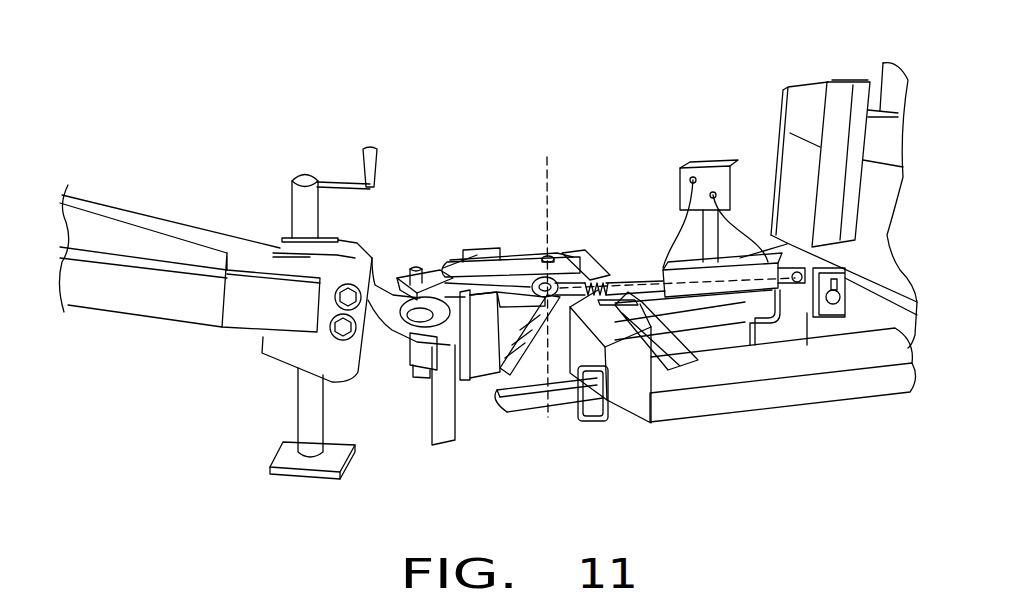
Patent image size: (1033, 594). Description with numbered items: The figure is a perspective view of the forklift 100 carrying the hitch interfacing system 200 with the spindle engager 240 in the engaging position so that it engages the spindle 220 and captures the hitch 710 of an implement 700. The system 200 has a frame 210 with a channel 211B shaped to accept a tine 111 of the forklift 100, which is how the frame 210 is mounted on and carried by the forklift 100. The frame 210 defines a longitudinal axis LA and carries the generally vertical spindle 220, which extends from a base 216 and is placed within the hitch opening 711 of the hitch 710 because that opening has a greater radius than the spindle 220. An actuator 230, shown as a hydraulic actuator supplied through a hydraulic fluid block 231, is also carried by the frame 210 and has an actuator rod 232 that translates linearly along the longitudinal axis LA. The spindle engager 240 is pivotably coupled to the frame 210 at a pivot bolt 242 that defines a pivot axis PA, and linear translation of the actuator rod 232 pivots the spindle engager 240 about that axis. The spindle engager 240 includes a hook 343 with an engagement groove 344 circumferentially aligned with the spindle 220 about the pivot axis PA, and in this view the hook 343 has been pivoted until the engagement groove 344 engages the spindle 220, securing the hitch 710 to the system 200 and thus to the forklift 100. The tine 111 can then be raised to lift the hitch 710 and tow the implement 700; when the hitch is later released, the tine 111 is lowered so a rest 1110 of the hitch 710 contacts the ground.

The forklift 100 is at (795, 64).
The hitch interfacing system 200 is at (696, 429).
The frame 210 is at (823, 362).
The channel 211B is at (597, 415).
The tine 111 is at (520, 410).
The actuator 230 is at (682, 263).
The hydraulic fluid block 231 is at (705, 166).
The actuator rod 232 is at (637, 277).
The spindle engager 240 is at (521, 246).
The pivot bolt 242 is at (557, 246).
The pivot axis PA is at (547, 173).
The longitudinal axis LA is at (702, 264).
The engagement groove 344 is at (400, 297).
The hook 343 is at (452, 380).
The spindle 220 is at (425, 262).
The base 216 is at (433, 347).
The implement 700 is at (186, 196).
The hitch 710 is at (390, 290).
The hitch opening 711 is at (402, 333).
The rest 1110 is at (283, 453).